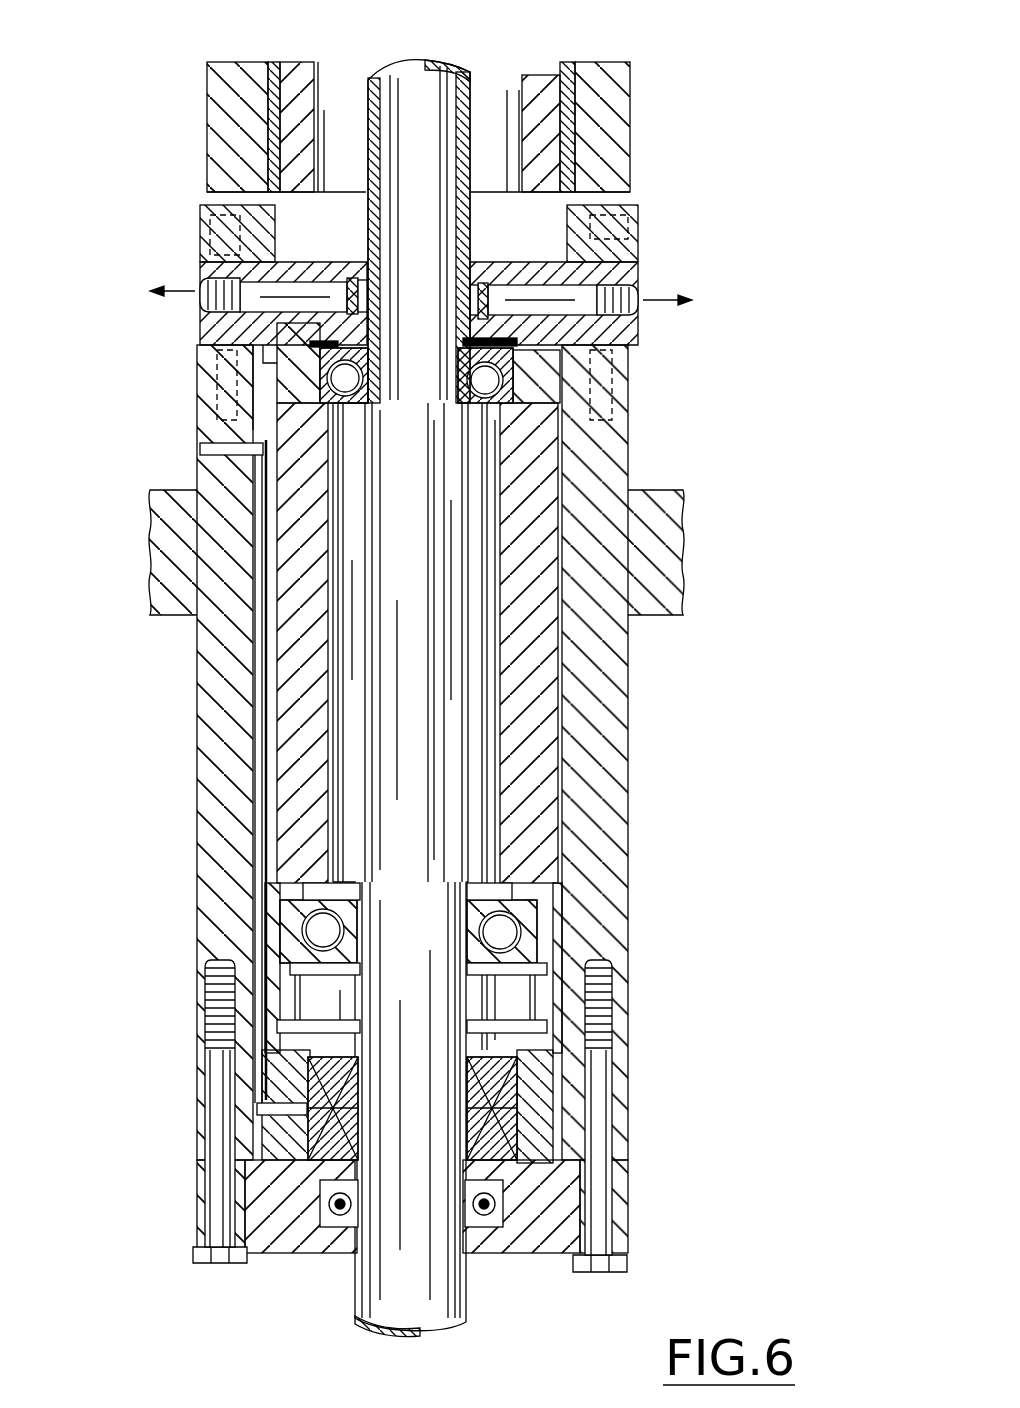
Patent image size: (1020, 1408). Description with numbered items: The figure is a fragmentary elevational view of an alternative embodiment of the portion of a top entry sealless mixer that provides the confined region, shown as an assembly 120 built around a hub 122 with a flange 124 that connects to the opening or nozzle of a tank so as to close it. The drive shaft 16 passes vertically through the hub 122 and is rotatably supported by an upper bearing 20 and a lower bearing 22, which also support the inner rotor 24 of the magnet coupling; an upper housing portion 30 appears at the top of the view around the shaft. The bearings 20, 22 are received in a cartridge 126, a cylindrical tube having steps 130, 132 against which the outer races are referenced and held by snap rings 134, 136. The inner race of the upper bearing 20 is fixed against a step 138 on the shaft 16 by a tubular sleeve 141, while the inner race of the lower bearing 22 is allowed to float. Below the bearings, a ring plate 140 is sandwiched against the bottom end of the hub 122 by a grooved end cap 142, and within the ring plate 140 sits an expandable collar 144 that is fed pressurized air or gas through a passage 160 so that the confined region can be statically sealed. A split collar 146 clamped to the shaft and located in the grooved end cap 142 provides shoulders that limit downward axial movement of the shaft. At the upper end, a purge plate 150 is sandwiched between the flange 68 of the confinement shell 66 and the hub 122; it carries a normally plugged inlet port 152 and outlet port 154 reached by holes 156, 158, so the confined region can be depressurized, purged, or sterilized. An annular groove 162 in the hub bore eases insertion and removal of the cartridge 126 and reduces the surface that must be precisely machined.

The drive shaft 16 is at (424, 724).
The upper bearing 20 is at (248, 365).
The lower bearing 22 is at (305, 946).
The inner rotor 24 is at (517, 95).
The upper housing 30 is at (625, 162).
The confinement shell 66 is at (565, 115).
The flange 68 is at (213, 247).
The assembly 120 is at (112, 723).
The hub 122 is at (625, 717).
The flange 124 is at (680, 543).
The cartridge 126 is at (300, 752).
The step 130 is at (292, 905).
The step 132 is at (320, 395).
The snap ring 134 is at (545, 968).
The snap ring 136 is at (520, 345).
The step 138 is at (440, 372).
The ring plate 140 is at (620, 1145).
The tubular sleeve 141 is at (508, 118).
The grooved end cap 142 is at (245, 1258).
The expandable collar 144 is at (503, 1075).
The split collar 146 is at (477, 1232).
The purge plate 150 is at (200, 315).
The inlet port 152 is at (575, 298).
The outlet port 154 is at (302, 290).
The hole 156 is at (560, 290).
The hole 158 is at (290, 250).
The passage 160 is at (265, 637).
The annular groove 162 is at (565, 682).